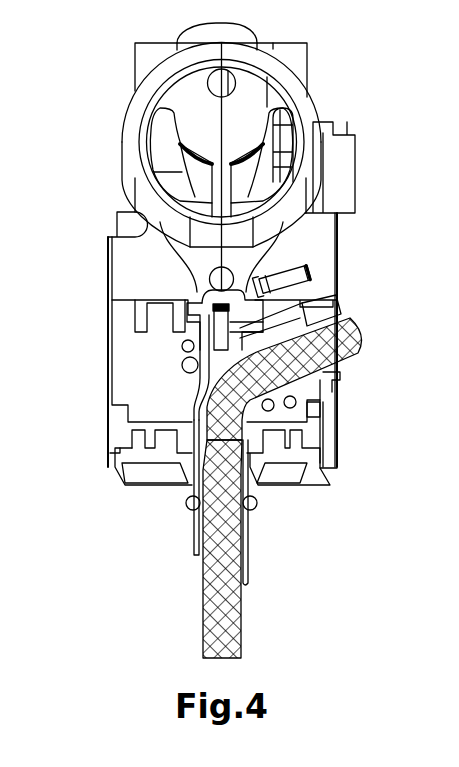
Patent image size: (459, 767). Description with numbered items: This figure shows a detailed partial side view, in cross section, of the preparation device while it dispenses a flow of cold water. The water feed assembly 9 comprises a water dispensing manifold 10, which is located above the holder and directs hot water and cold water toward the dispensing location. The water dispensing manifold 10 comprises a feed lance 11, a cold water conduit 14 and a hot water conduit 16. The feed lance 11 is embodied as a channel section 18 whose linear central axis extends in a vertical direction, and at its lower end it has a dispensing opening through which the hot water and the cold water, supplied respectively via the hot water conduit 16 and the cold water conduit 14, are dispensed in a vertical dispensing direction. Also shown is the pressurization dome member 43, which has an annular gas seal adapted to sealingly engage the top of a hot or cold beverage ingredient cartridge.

The water feed assembly 9 is at (86, 206).
The water dispensing manifold 10 is at (150, 376).
The feed lance 11 is at (178, 533).
The cold water conduit 14 is at (345, 310).
The hot water conduit 16 is at (310, 260).
The channel section 18 is at (255, 487).
The pressurization dome member 43 is at (106, 475).